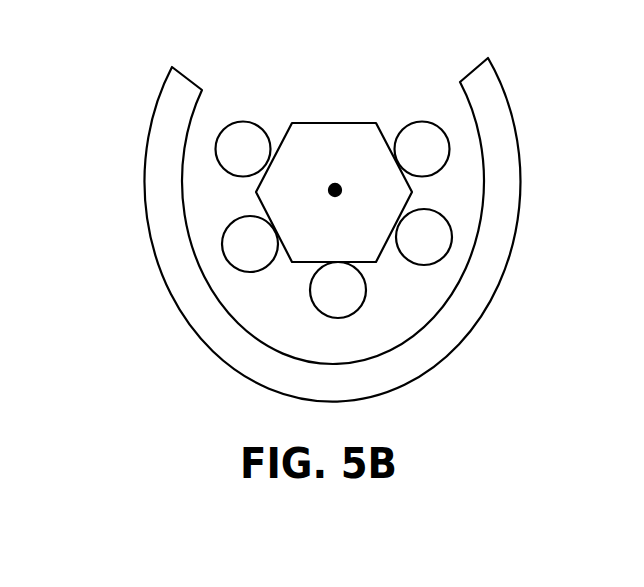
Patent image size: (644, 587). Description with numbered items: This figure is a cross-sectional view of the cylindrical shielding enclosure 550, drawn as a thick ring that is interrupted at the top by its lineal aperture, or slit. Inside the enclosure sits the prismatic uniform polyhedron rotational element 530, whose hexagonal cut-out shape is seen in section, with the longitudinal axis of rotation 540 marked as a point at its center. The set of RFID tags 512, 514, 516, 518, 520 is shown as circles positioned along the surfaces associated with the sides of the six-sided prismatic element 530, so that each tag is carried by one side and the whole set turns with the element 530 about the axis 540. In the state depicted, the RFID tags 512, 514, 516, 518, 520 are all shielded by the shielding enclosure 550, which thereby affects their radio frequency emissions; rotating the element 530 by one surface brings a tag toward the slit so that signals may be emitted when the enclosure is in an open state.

The RFID tag 512 is at (427, 152).
The RFID tag 514 is at (432, 240).
The RFID tag 516 is at (330, 285).
The RFID tag 518 is at (233, 242).
The RFID tag 520 is at (248, 135).
The prismatic uniform polyhedron rotational element 530 is at (318, 230).
The longitudinal axis of rotation 540 is at (335, 190).
The shielding enclosure 550 is at (493, 105).